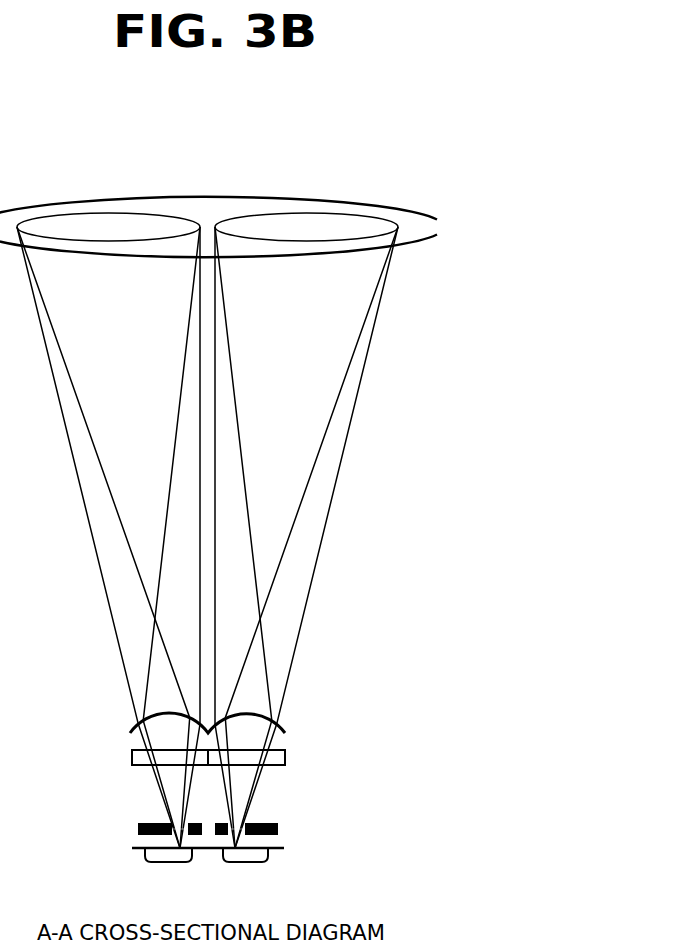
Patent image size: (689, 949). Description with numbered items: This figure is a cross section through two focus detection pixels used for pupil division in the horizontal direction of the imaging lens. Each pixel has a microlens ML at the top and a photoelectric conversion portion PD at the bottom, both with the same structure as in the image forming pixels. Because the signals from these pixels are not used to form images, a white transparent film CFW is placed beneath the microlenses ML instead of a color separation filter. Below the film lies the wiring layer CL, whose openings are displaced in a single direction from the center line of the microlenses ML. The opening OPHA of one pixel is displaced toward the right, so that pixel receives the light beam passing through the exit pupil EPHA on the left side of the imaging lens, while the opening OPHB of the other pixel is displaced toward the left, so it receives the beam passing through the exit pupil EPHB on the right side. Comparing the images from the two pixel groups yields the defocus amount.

The exit pupil EPHA is at (103, 228).
The exit pupil EPHB is at (310, 228).
The microlens ML is at (168, 722).
The transparent film CFW is at (340, 718).
The opening OPHA is at (181, 810).
The opening OPHB is at (237, 810).
The wiring layer CL is at (280, 828).
The photoelectric conversion portion PD is at (177, 853).